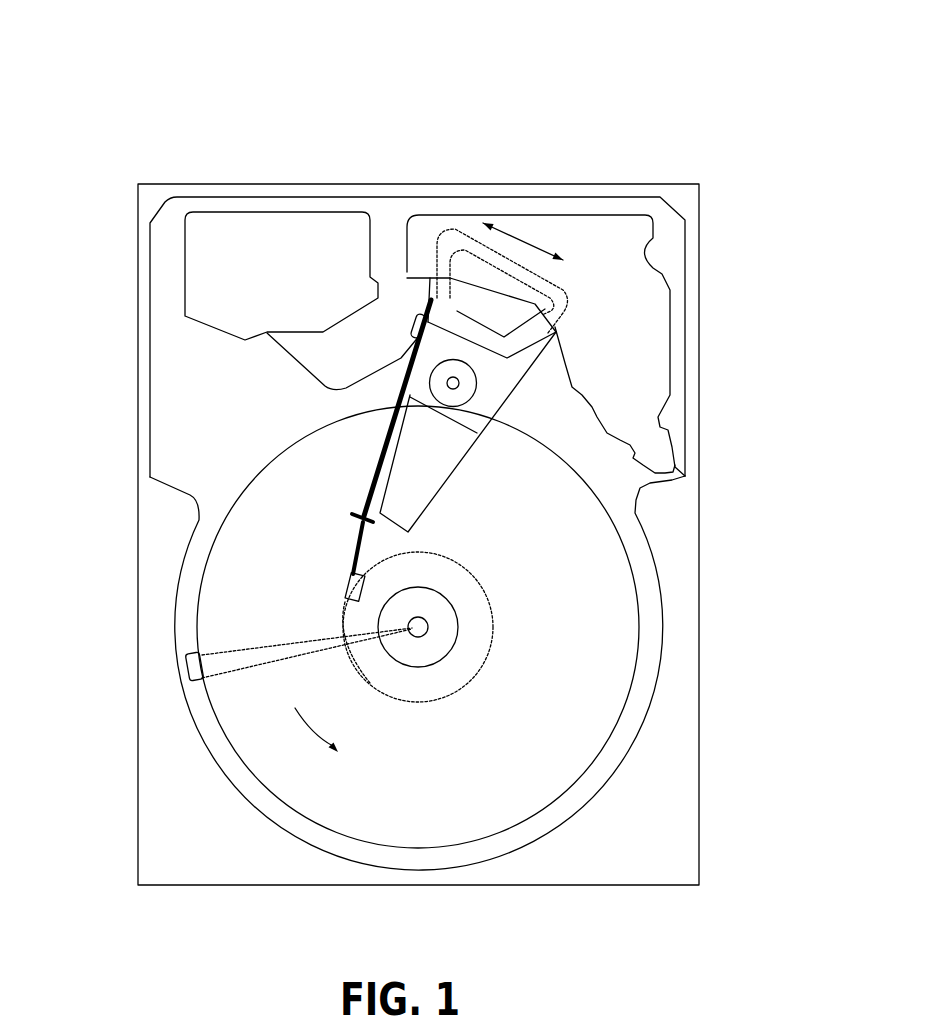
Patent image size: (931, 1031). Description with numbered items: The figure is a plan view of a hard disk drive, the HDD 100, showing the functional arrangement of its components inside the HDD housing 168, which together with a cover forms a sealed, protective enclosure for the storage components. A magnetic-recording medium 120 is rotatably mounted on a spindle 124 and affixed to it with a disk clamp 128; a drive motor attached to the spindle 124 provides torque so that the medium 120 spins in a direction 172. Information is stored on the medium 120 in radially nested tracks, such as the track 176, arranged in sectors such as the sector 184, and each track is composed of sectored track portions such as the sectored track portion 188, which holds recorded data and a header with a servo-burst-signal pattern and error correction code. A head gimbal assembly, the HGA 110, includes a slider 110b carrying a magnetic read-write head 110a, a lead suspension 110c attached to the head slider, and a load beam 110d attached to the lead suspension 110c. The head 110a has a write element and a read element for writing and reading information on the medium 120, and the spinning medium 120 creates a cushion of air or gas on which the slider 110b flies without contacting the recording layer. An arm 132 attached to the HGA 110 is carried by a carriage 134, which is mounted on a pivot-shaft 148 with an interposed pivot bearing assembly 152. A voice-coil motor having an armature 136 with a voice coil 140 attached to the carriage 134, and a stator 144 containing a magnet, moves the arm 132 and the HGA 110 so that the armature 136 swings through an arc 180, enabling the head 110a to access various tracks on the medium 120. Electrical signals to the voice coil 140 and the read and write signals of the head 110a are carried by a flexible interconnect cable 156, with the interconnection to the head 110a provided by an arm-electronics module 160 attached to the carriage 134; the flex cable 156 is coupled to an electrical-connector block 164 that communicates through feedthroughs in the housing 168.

The hard disk drive 100 is at (73, 83).
The head gimbal assembly 110 is at (73, 460).
The magnetic read-write head 110a is at (343, 600).
The slider 110b is at (348, 580).
The lead suspension 110c is at (357, 557).
The load beam 110d is at (355, 512).
The magnetic-recording medium 120 is at (585, 588).
The spindle 124 is at (420, 624).
The disk clamp 128 is at (442, 640).
The arm 132 is at (410, 482).
The carriage 134 is at (472, 412).
The armature 136 is at (433, 298).
The voice coil 140 is at (448, 305).
The stator 144 is at (637, 297).
The pivot-shaft 148 is at (461, 381).
The pivot bearing assembly 152 is at (465, 395).
The flexible interconnect cable 156 is at (297, 363).
The arm-electronics module 160 is at (413, 337).
The electrical-connector block 164 is at (207, 275).
The HDD housing 168 is at (683, 193).
The direction of spin 172 is at (322, 737).
The track 176 is at (485, 590).
The arc 180 is at (523, 232).
The sector 184 is at (187, 665).
The sectored track portion 188 is at (340, 603).